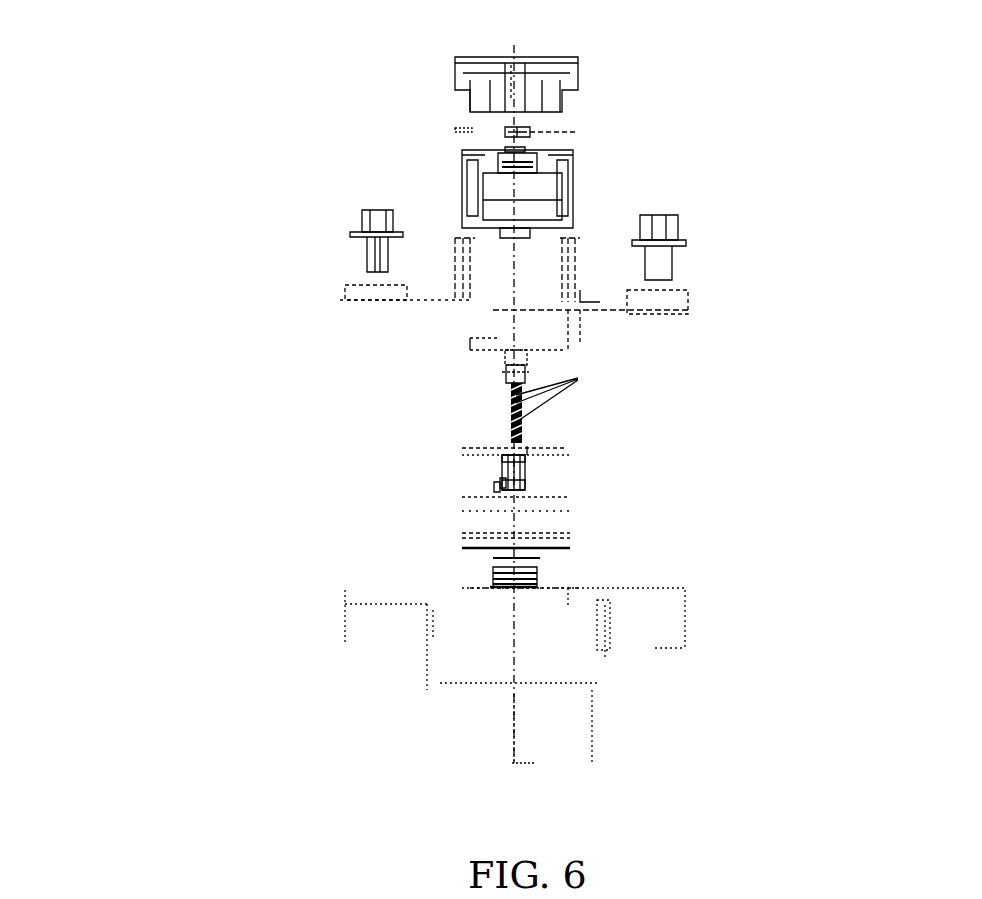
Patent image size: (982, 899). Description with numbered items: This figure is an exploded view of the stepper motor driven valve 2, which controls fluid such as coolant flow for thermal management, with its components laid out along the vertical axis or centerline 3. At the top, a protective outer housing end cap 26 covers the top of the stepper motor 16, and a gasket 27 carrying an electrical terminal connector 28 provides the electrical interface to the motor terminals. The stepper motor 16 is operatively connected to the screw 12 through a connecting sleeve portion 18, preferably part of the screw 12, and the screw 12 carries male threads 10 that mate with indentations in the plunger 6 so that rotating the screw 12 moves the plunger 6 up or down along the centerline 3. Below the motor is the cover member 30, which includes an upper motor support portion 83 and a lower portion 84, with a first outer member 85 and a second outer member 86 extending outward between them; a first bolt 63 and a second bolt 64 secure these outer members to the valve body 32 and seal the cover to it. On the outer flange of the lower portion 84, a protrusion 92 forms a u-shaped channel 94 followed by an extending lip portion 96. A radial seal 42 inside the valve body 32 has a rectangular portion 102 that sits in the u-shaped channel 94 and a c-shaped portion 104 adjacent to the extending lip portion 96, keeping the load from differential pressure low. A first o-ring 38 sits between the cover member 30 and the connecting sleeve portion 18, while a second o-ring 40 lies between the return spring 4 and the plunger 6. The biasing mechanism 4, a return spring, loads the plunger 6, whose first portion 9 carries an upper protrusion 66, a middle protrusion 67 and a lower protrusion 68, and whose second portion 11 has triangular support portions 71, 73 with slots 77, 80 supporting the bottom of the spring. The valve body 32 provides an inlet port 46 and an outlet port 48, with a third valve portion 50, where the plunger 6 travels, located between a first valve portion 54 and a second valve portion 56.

The valve 2 is at (818, 142).
The vertical axis or centerline 3 is at (513, 60).
The biasing mechanism 4 is at (497, 572).
The plunger 6 is at (592, 512).
The first portion 9 is at (568, 524).
The male threads 10 is at (566, 396).
The second portion 11 is at (560, 480).
The screw 12 is at (511, 418).
The stepper motor 16 is at (548, 176).
The connecting sleeve portion 18 is at (507, 372).
The protective outer housing end cap 26 is at (548, 83).
The gasket 27 is at (455, 128).
The electrical terminal connector 28 is at (507, 126).
The cover member 30 is at (515, 294).
The valve body 32 is at (516, 647).
The first o-ring 38 is at (507, 360).
The second o-ring 40 is at (497, 577).
The radial seal 42 is at (546, 440).
The inlet port 46 is at (692, 625).
The outlet port 48 is at (510, 740).
The third valve portion 50 is at (524, 650).
The first valve portion 54 is at (617, 625).
The second valve portion 56 is at (501, 729).
The first bolt 63 is at (365, 210).
The second bolt 64 is at (657, 220).
The first, upper protrusion 66 is at (567, 499).
The second, middle protrusion 67 is at (568, 538).
The third, lower protrusion 68 is at (568, 548).
The triangular support portion 71 is at (497, 487).
The triangular support portion 73 is at (538, 487).
The slot 77 is at (500, 478).
The slot 80 is at (535, 465).
The upper motor support portion 83 is at (458, 250).
The lower portion 84 is at (571, 320).
The first outer member 85 is at (447, 295).
The second outer member 86 is at (603, 309).
The protrusion 92 is at (502, 342).
The u-shaped channel 94 is at (473, 343).
The extending lip portion 96 is at (569, 352).
The rectangular portion 102 is at (505, 440).
The c-shaped portion 104 is at (568, 455).